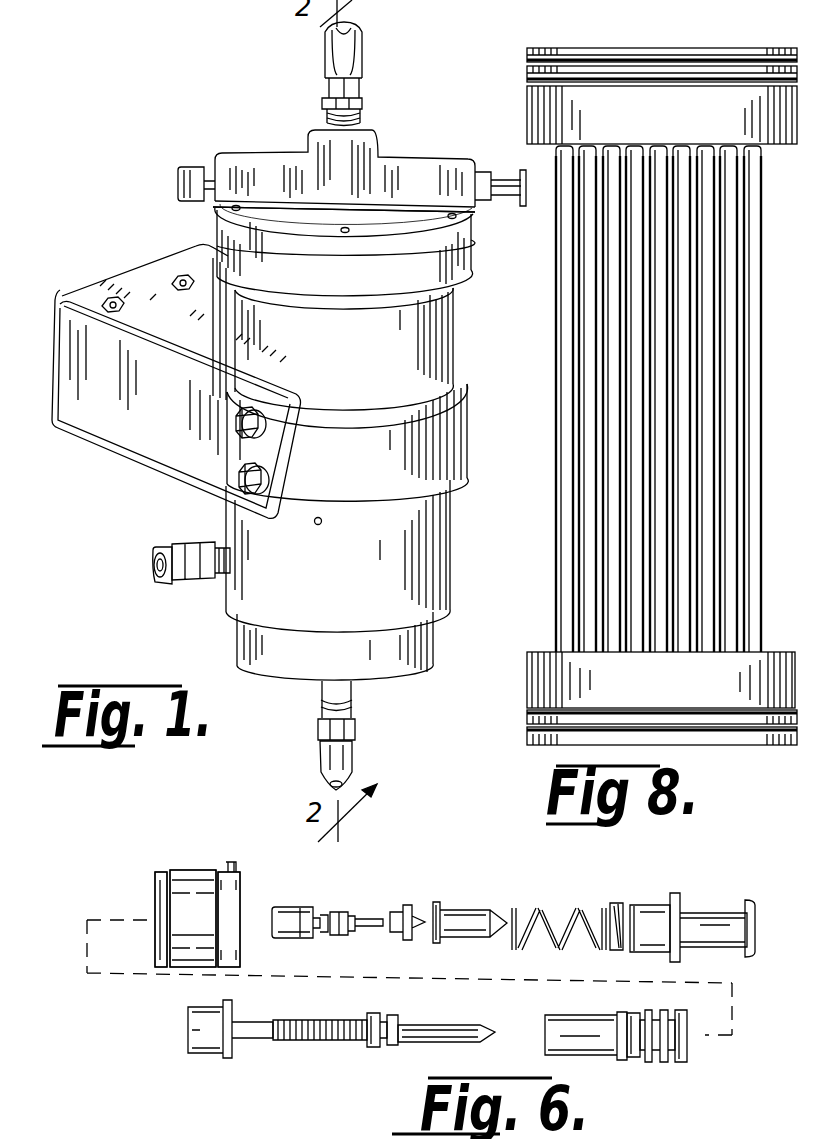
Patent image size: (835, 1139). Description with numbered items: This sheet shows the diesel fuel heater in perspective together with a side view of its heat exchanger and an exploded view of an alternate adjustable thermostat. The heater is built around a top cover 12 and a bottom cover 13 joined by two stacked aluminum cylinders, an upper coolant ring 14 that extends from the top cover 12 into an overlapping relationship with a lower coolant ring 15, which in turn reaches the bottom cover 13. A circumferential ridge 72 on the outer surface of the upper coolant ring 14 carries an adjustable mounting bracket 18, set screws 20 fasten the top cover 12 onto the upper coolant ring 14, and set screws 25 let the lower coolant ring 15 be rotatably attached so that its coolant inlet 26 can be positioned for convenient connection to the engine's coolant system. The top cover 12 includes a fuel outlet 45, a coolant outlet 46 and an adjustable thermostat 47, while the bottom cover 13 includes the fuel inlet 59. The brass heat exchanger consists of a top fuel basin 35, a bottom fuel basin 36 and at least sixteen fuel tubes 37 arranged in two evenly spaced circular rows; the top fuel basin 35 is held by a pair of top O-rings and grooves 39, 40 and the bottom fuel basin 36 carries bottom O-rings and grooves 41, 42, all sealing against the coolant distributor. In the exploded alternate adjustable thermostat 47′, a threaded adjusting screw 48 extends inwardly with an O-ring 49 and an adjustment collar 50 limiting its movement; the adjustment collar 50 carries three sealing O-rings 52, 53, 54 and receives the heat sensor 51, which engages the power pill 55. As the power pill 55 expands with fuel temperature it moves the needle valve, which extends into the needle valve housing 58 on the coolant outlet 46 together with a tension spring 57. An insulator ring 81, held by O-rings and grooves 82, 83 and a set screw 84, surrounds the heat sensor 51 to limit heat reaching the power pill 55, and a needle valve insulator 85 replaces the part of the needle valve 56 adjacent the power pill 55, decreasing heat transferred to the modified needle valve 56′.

In FIG. 1, the top cover 12 is at (242, 157).
In FIG. 1, the bottom cover 13 is at (262, 684).
In FIG. 1, the upper coolant ring 14 is at (425, 330).
In FIG. 1, the lower coolant ring 15 is at (425, 572).
In FIG. 1, the adjustable mounting bracket 18 is at (176, 402).
In FIG. 1, the set screws 20 is at (220, 205).
In FIG. 1, the set screws 25 is at (322, 520).
In FIG. 1, the coolant inlet 26 is at (190, 546).
In FIG. 8, the top fuel basin 35 is at (542, 108).
In FIG. 8, the bottom fuel basin 36 is at (556, 676).
In FIG. 8, the fuel tubes 37 is at (752, 600).
In FIG. 8, the top O-ring and groove 39 is at (535, 62).
In FIG. 8, the top O-ring and groove 40 is at (536, 86).
In FIG. 8, the bottom O-ring and groove 41 is at (540, 710).
In FIG. 8, the bottom O-ring and groove 42 is at (538, 730).
In FIG. 1, the fuel outlet 45 is at (332, 126).
In FIG. 1, the coolant outlet 46 is at (510, 190).
In FIG. 6, the coolant outlet 46 is at (706, 925).
In FIG. 1, the adjustable thermostat 47 is at (177, 182).
In FIG. 6, the adjustable thermostat 47 is at (230, 1049).
In FIG. 6, the alternate adjustable thermostat 47′ is at (268, 1050).
In FIG. 6, the threaded adjusting screw 48 is at (320, 1042).
In FIG. 6, the O-ring 49 is at (398, 1046).
In FIG. 6, the adjustment collar 50 is at (374, 1050).
In FIG. 6, the heat sensor 51 is at (558, 1015).
In FIG. 6, the sealing O-ring 52 is at (633, 1013).
In FIG. 6, the sealing O-ring 53 is at (650, 1012).
In FIG. 6, the sealing O-ring 54 is at (672, 1012).
In FIG. 6, the power pill 55 is at (296, 912).
In FIG. 6, the needle valve 56 is at (470, 902).
In FIG. 6, the modified needle valve 56′ is at (465, 915).
In FIG. 6, the tension spring 57 is at (542, 912).
In FIG. 6, the needle valve housing 58 is at (606, 910).
In FIG. 1, the fuel inlet 59 is at (355, 692).
In FIG. 1, the circumferential ridge 72 is at (432, 434).
In FIG. 6, the insulator ring 81 is at (147, 903).
In FIG. 6, the O-ring and groove 82 is at (168, 870).
In FIG. 6, the O-ring and groove 83 is at (218, 870).
In FIG. 6, the set screw 84 is at (236, 860).
In FIG. 6, the needle valve insulator 85 is at (400, 905).